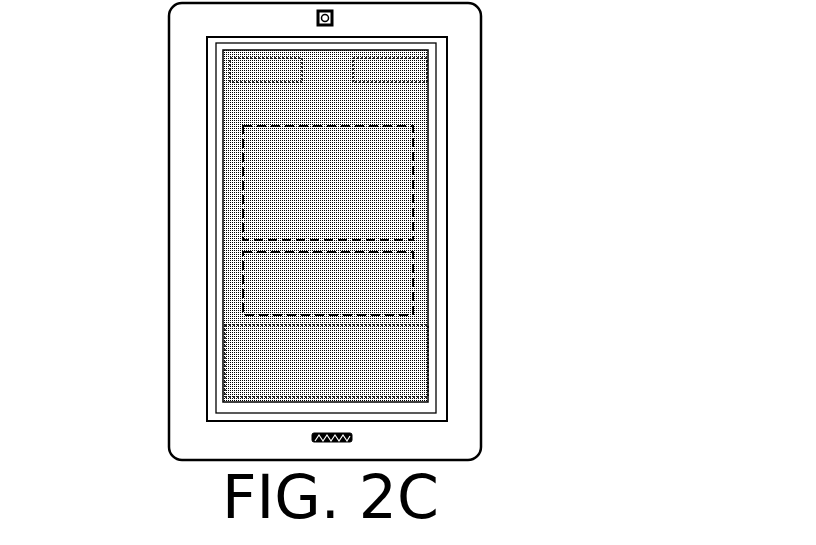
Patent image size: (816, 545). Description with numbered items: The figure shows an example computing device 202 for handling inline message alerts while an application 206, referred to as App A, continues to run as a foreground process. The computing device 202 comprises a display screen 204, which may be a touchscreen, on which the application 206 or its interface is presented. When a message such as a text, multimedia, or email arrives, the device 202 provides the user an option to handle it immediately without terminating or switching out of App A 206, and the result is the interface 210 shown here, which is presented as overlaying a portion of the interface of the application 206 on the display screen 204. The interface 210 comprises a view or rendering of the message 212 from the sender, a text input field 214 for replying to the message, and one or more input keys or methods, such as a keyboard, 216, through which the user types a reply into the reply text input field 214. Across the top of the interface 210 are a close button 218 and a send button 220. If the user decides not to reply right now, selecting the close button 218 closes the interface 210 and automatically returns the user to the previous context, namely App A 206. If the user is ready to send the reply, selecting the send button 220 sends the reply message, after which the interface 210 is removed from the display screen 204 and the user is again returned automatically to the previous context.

The computing device 202 is at (169, 63).
The display screen 204 is at (207, 150).
The application 206 is at (223, 222).
The interface 210 is at (432, 103).
The message 212 is at (413, 182).
The text input field 214 is at (413, 280).
The input keys 216 is at (427, 355).
The close button 218 is at (238, 57).
The send button 220 is at (418, 55).